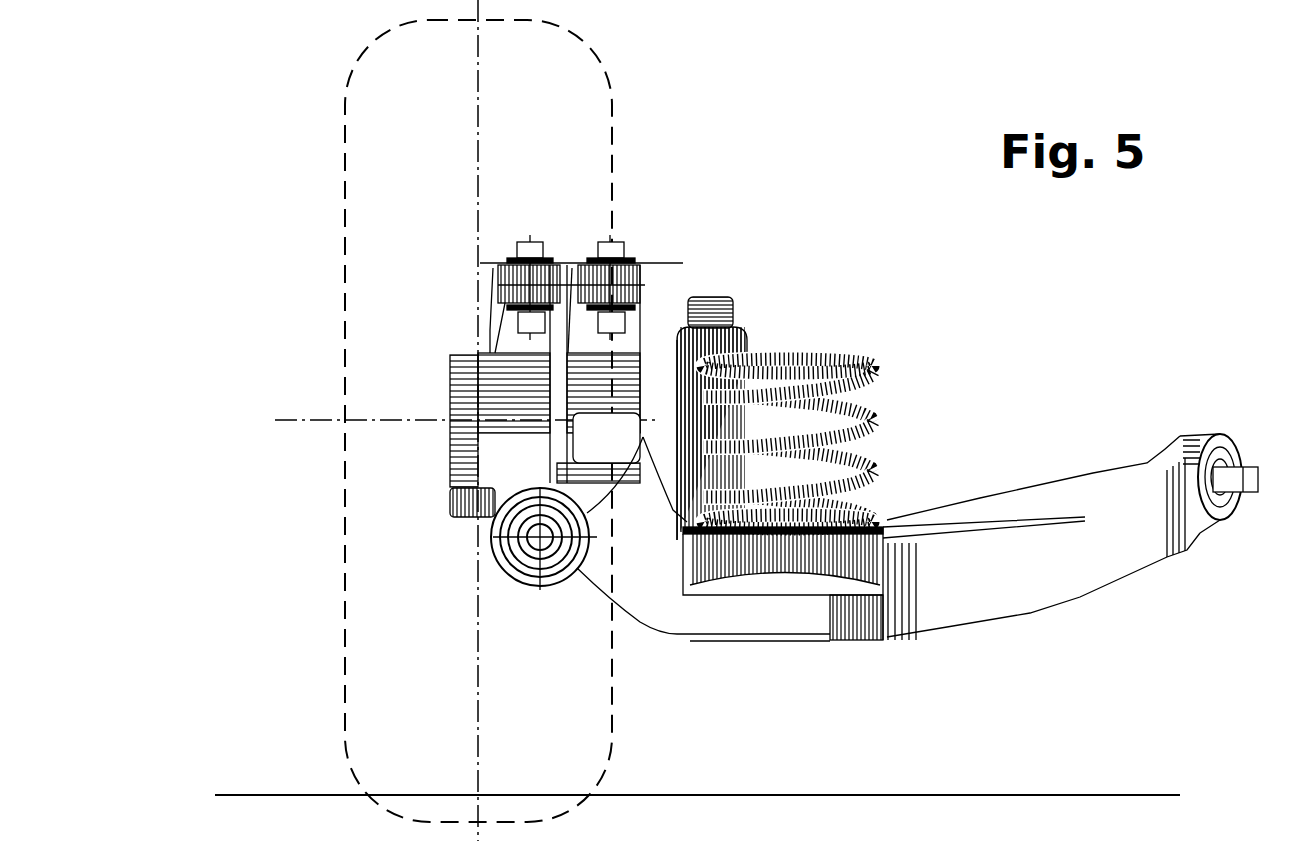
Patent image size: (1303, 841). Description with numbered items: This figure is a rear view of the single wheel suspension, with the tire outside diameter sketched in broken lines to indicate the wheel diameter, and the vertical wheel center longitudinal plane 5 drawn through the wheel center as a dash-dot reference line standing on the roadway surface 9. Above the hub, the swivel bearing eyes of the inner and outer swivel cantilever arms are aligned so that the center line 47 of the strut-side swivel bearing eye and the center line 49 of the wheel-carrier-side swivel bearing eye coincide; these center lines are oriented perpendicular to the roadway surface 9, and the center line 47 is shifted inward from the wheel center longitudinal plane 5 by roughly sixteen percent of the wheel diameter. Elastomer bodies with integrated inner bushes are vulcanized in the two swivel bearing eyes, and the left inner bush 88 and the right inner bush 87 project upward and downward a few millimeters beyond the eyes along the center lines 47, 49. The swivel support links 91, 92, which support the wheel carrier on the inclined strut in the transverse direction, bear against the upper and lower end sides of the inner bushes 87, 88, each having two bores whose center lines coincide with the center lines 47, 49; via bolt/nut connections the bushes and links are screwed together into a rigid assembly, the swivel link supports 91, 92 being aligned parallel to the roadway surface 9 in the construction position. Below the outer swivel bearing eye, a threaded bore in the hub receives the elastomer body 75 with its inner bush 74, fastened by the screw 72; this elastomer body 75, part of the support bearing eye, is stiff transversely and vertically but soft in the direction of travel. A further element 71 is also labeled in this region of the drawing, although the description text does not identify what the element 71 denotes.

The wheel center longitudinal plane 5 is at (480, 180).
The roadway surface 9 is at (277, 420).
The center line 47 is at (610, 235).
The center line 49 is at (530, 238).
The ball joint housing 71 is at (500, 565).
The screw 72 is at (497, 547).
The inner bush 74 is at (555, 560).
The elastomer body 75 is at (518, 570).
The inner bush 87 is at (683, 263).
The inner bush 88 is at (498, 263).
The swivel support link 91 is at (565, 253).
The swivel support link 92 is at (650, 325).